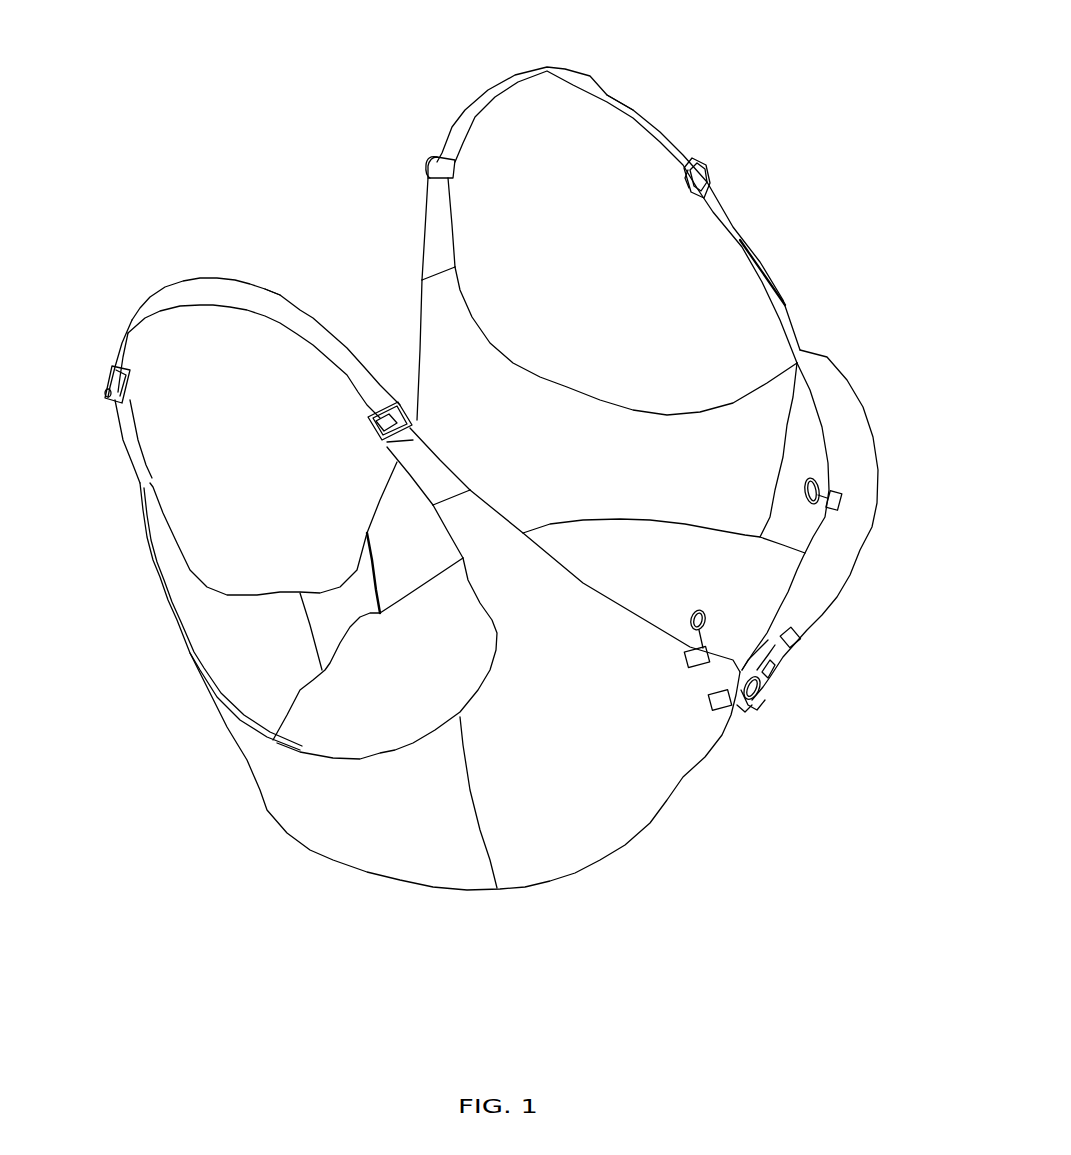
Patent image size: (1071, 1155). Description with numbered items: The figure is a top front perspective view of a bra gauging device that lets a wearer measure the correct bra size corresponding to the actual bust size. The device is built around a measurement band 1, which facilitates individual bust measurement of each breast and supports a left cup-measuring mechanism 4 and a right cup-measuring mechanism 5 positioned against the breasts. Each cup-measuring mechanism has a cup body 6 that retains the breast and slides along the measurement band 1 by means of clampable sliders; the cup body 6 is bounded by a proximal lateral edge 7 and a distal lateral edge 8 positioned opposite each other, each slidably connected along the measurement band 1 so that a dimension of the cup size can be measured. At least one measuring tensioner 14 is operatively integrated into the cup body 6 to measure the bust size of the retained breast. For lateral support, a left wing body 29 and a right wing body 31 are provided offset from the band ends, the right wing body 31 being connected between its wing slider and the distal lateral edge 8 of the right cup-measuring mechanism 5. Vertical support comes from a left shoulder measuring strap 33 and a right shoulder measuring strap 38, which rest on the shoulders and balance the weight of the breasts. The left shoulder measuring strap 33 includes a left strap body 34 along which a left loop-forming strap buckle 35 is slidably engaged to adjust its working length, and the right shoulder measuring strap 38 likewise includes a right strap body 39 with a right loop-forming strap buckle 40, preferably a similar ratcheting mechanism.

The measurement band 1 is at (763, 655).
The left cup-measuring mechanism 4 is at (917, 490).
The right cup-measuring mechanism 5 is at (613, 905).
The cup body 6 is at (857, 410).
The proximal lateral edge 7 is at (789, 655).
The distal lateral edge 8 is at (792, 460).
The measuring tensioner 14 is at (807, 512).
The left wing body 29 is at (583, 407).
The right wing body 31 is at (330, 848).
The left shoulder measuring strap 33 is at (560, 58).
The left strap body 34 is at (632, 110).
The left loop-forming strap buckle 35 is at (707, 178).
The right shoulder measuring strap 38 is at (195, 262).
The right strap body 39 is at (277, 318).
The right loop-forming strap buckle 40 is at (106, 383).